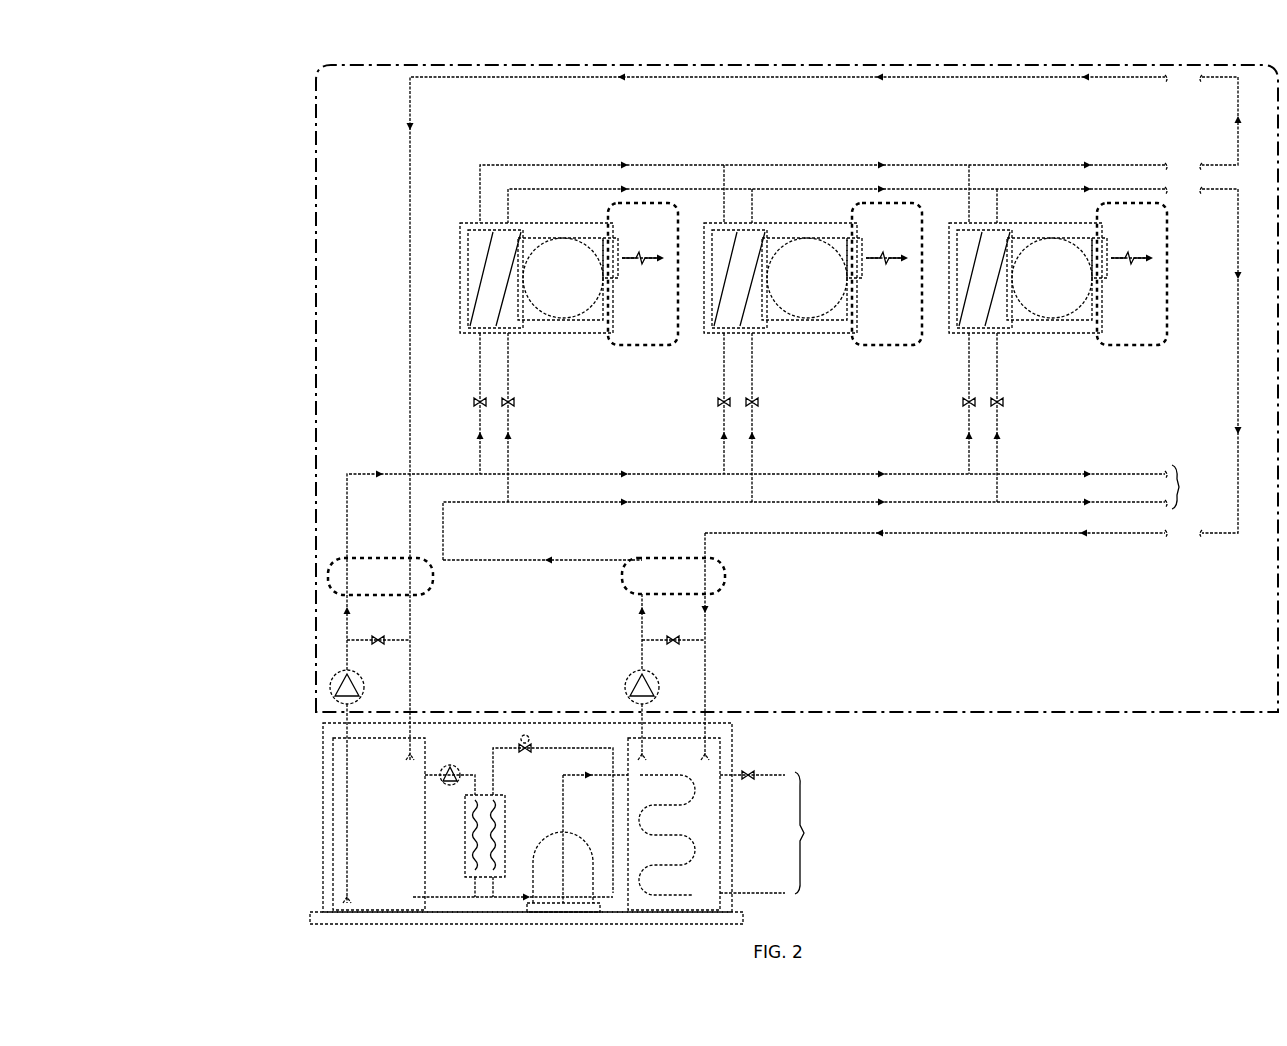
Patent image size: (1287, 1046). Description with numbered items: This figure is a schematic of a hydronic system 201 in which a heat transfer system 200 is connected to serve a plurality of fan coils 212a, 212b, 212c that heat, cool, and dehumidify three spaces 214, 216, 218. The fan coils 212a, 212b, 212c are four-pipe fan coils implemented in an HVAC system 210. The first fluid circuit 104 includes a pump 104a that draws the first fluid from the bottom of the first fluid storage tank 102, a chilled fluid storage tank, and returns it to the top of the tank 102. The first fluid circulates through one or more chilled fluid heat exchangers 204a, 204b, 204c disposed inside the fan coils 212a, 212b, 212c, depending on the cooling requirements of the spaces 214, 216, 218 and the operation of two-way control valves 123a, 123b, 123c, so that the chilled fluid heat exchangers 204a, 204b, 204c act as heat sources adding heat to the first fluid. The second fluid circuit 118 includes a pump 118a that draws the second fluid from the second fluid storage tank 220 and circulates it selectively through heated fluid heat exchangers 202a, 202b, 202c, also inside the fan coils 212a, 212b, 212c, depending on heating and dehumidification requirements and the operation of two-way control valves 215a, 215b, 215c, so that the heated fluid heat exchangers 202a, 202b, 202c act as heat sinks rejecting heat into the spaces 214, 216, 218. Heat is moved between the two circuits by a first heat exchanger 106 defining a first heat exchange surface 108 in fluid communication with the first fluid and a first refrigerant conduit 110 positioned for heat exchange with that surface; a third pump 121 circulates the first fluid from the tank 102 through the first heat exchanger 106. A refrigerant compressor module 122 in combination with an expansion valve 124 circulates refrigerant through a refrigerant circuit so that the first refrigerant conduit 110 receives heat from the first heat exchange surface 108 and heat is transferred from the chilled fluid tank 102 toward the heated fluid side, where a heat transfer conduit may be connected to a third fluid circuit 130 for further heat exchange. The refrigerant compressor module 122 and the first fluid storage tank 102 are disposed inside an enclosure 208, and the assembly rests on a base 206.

The hydronic system 201 is at (238, 102).
The HVAC system 210 is at (315, 203).
The chilled fluid heat exchanger 204a is at (491, 273).
The chilled fluid heat exchanger 204b is at (736, 273).
The chilled fluid heat exchanger 204c is at (980, 273).
The heated fluid heat exchanger 202a is at (520, 273).
The heated fluid heat exchanger 202b is at (765, 273).
The heated fluid heat exchanger 202c is at (1006, 273).
The space 214 is at (652, 200).
The space 216 is at (897, 200).
The space 218 is at (1143, 200).
The fan coil 212a is at (393, 202).
The fan coil 212b is at (515, 215).
The fan coil 212c is at (638, 232).
The two-way control valve 123a is at (456, 403).
The two-way control valve 123b is at (701, 403).
The two-way control valve 123c is at (947, 403).
The two-way control valve 215a is at (535, 417).
The two-way control valve 215b is at (779, 417).
The two-way control valve 215c is at (1021, 417).
The second fluid circuit 118 is at (663, 558).
The first fluid circuit 104 is at (370, 558).
The pump 118a is at (640, 683).
The pump 104a is at (345, 683).
The enclosure 208 is at (480, 750).
The base 206 is at (382, 917).
The heat transfer system 200 is at (542, 824).
The first fluid storage tank 102 is at (393, 902).
The first heat exchange surface 108 is at (473, 840).
The first heat exchanger 106 is at (485, 867).
The first refrigerant conduit 110 is at (495, 838).
The refrigerant compressor module 122 is at (577, 890).
The second fluid storage tank 220 is at (653, 902).
The third pump 121 is at (450, 787).
The expansion valve 124 is at (573, 757).
The third fluid circuit 130 is at (807, 833).